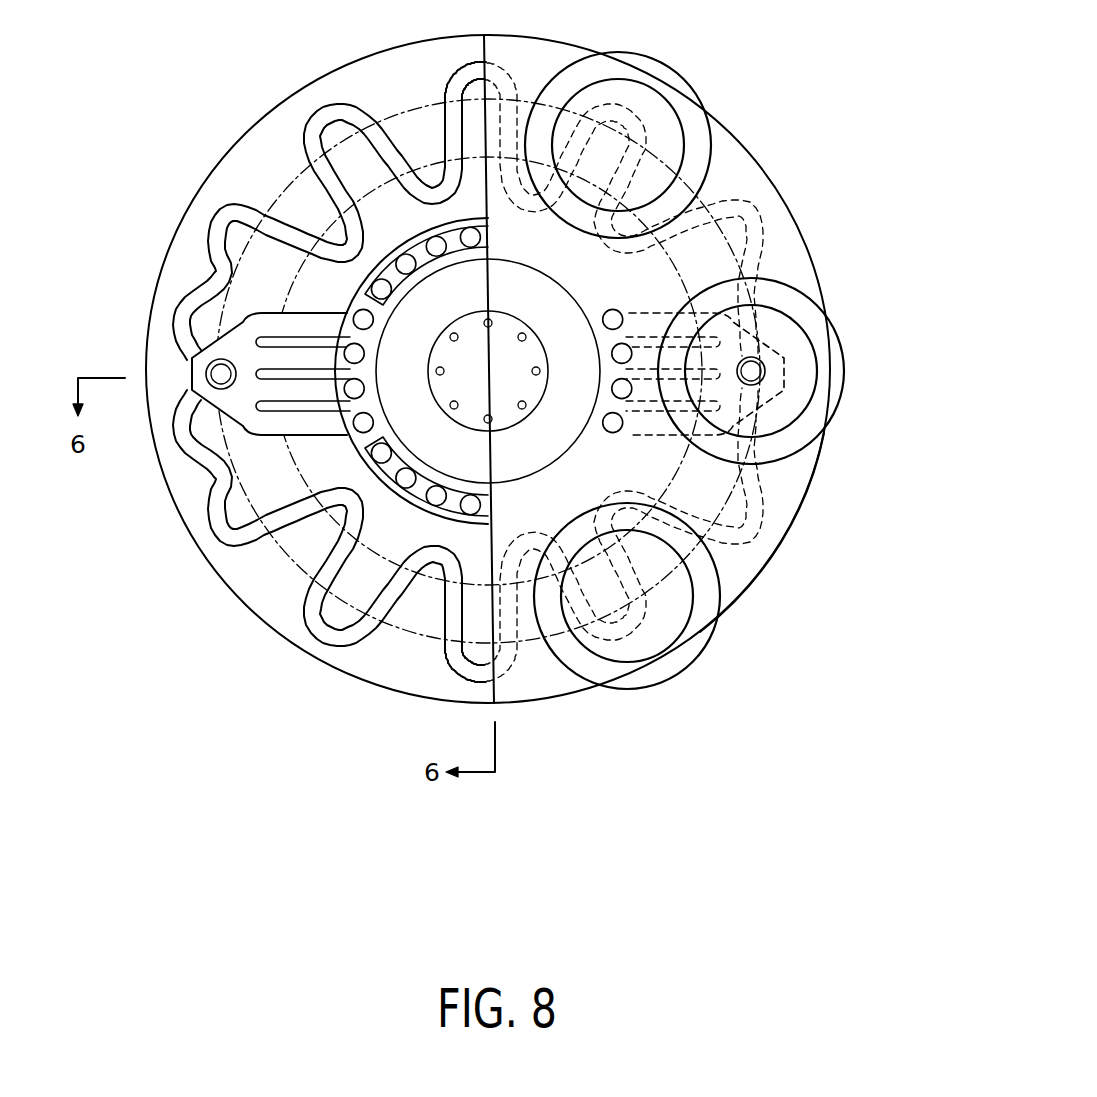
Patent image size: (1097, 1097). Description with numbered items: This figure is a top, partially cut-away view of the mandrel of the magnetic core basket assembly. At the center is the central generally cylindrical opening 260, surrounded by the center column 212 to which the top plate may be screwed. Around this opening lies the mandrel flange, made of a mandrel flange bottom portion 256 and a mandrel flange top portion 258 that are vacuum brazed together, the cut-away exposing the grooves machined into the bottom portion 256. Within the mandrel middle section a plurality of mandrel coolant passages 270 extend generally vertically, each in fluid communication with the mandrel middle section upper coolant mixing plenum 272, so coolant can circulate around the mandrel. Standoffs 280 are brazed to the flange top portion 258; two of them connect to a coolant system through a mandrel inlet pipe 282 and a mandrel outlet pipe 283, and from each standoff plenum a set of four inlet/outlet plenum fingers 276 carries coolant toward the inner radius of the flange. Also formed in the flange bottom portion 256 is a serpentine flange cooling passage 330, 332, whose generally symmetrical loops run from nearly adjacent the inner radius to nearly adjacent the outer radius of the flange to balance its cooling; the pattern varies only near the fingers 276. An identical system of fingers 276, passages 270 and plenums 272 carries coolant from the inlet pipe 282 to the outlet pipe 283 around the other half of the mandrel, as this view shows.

The center column 212 is at (534, 382).
The mandrel flange bottom portion 256 is at (382, 684).
The mandrel flange top portion 258 is at (738, 570).
The central generally cylindrical opening 260 is at (470, 466).
The mandrel coolant passages 270 is at (391, 310).
The mandrel middle section upper coolant mixing plenum 272 is at (424, 268).
The inlet/outlet plenum fingers 276 is at (308, 315).
The standoffs 280 is at (658, 70).
The mandrel inlet pipe 282 is at (766, 367).
The mandrel outlet pipe 283 is at (220, 375).
The serpentine flange cooling passage 330 is at (537, 300).
The serpentine flange cooling passage 332 is at (760, 205).